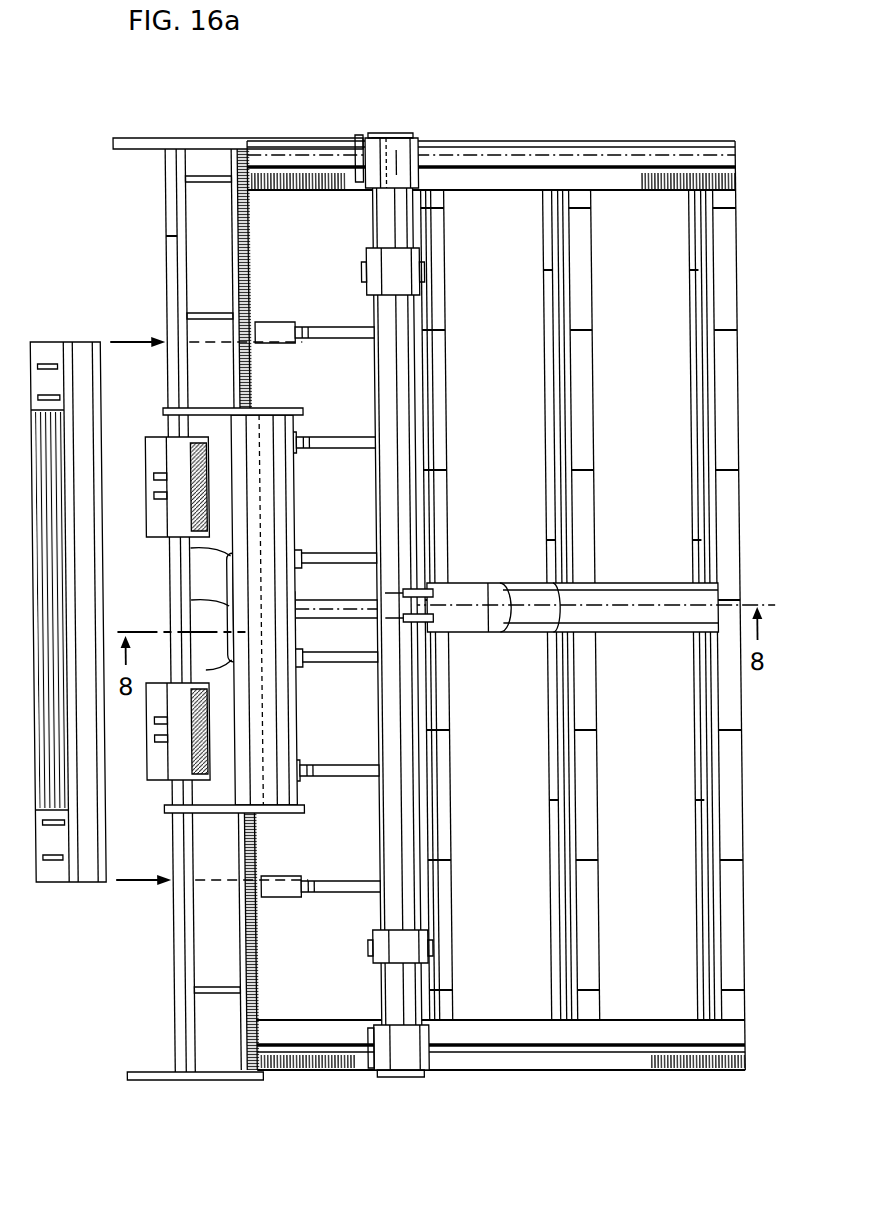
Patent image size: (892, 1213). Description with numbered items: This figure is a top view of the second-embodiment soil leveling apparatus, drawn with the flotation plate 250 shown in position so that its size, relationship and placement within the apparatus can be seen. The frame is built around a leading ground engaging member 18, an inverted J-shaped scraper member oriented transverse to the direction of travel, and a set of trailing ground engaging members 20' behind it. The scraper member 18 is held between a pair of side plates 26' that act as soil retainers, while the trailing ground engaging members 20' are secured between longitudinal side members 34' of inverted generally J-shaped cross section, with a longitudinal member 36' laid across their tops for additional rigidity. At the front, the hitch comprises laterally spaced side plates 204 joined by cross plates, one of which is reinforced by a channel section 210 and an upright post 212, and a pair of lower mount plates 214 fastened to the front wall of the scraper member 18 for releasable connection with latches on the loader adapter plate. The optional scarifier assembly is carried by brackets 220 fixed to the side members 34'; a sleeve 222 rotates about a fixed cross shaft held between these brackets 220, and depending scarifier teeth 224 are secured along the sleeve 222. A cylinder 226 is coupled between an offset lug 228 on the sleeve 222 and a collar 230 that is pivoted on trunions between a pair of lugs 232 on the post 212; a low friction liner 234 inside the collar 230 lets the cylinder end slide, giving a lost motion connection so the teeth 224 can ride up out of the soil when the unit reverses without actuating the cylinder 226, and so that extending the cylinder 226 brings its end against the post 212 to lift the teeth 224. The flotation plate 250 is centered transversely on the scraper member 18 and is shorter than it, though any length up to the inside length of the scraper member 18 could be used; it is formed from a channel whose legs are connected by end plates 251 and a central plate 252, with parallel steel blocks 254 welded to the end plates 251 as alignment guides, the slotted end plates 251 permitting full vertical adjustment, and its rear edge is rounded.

The leading ground engaging member 18 is at (176, 958).
The trailing ground engaging members 20' is at (583, 605).
The side plates 26' is at (243, 590).
The longitudinal side members 34' is at (496, 603).
The longitudinal member 36' is at (577, 591).
The side plates 204 is at (162, 408).
The channel section 210 is at (262, 414).
The upright post 212 is at (224, 590).
The lower mount plates 214 is at (160, 538).
The brackets 220 is at (365, 137).
The sleeve 222 is at (413, 805).
The scarifier teeth 224 is at (312, 322).
The cylinder 226 is at (318, 620).
The offset lug 228 is at (432, 583).
The collar 230 is at (278, 556).
The lugs 232 is at (228, 570).
The liner 234 is at (288, 600).
The flotation plate 250 is at (80, 332).
The plates 251 is at (65, 380).
The plate 252 is at (75, 560).
The steel blocks 254 is at (58, 402).